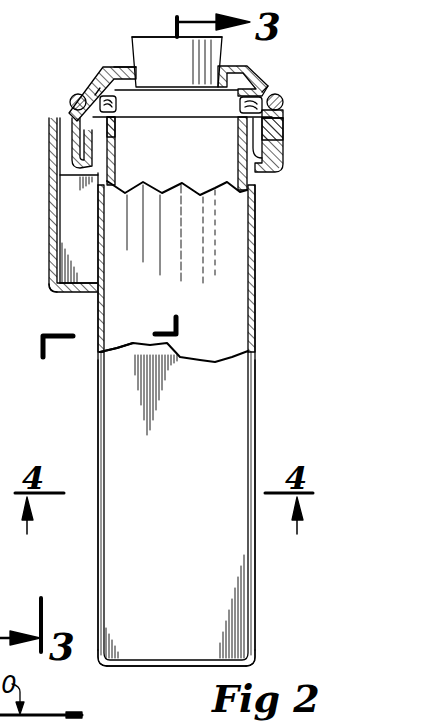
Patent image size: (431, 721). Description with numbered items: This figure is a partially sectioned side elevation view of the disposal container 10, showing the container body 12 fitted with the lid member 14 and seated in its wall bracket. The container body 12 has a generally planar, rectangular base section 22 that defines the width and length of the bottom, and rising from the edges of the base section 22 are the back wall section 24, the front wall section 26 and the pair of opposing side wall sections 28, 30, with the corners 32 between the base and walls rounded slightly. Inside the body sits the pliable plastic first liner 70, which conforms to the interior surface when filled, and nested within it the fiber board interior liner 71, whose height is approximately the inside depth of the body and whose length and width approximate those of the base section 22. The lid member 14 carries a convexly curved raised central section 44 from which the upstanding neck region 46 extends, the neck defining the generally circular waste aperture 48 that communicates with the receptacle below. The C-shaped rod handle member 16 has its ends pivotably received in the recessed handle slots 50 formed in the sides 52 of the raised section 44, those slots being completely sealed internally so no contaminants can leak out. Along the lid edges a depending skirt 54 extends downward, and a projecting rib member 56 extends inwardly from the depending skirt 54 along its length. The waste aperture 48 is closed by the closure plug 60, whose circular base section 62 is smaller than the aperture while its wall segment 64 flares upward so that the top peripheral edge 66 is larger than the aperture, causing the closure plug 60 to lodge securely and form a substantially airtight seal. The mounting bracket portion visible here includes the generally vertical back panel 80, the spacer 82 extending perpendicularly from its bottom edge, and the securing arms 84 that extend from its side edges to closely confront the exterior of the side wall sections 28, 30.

The disposal container 10 is at (65, 40).
The container body 12 is at (272, 338).
The lid member 14 is at (262, 56).
The handle member 16 is at (70, 101).
The base section 22 is at (172, 668).
The back wall section 24 is at (97, 415).
The front wall section 26 is at (256, 415).
The side wall section 28 is at (183, 468).
The side wall section 30 is at (116, 392).
The corners 32 is at (97, 665).
The raised central section 44 is at (250, 78).
The neck region 46 is at (115, 69).
The waste aperture 48 is at (133, 66).
The handle slots 50 is at (117, 107).
The sides of the raised section 52 is at (96, 93).
The depending skirt 54 is at (72, 118).
The projecting rib member 56 is at (270, 172).
The closure plug 60 is at (147, 26).
The base section of the closure plug 62 is at (168, 90).
The wall segment 64 is at (185, 62).
The top peripheral edge 66 is at (53, 714).
The first liner 70 is at (118, 114).
The interior liner 71 is at (116, 155).
The back panel 80 is at (49, 138).
The spacer 82 is at (76, 293).
The securing arms 84 is at (56, 292).